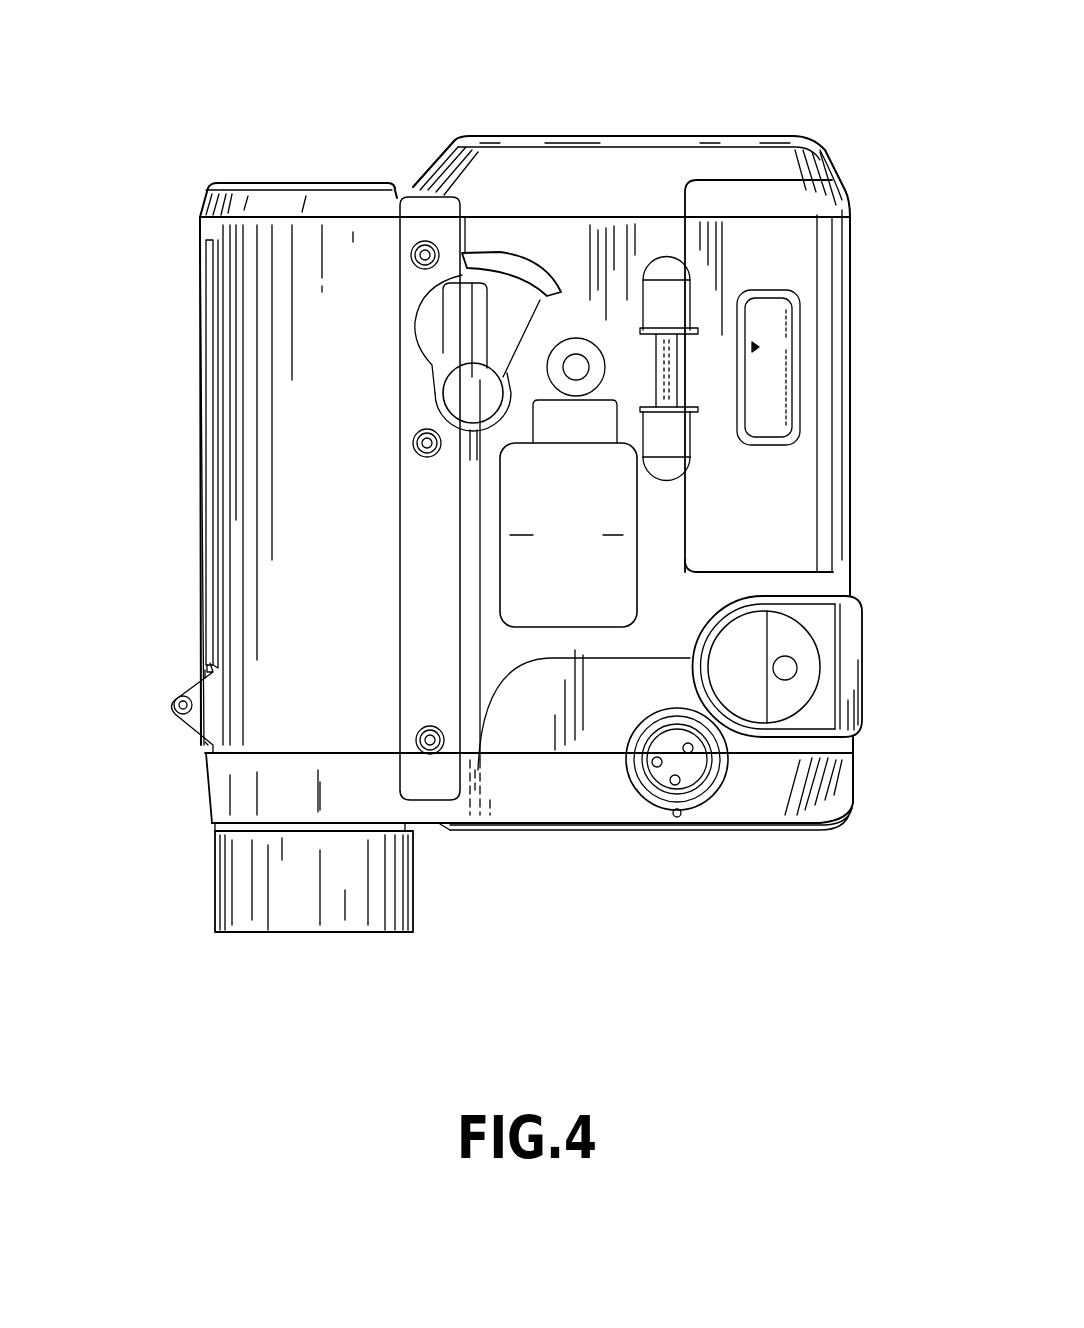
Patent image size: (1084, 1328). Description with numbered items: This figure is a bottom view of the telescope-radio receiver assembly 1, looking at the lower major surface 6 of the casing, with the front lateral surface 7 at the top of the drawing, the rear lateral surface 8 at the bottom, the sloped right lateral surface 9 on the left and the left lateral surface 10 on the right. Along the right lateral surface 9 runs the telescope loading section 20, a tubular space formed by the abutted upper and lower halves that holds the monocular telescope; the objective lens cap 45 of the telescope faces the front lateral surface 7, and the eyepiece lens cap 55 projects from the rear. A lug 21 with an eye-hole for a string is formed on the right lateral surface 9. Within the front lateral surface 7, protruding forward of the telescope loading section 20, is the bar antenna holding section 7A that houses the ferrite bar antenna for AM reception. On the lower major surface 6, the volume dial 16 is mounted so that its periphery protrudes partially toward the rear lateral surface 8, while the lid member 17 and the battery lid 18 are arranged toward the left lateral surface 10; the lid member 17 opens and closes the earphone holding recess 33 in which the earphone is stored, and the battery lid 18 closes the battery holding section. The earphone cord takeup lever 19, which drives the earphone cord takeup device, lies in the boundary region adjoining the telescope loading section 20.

The telescope-radio receiver assembly 1 is at (178, 318).
The lower major surface 6 is at (663, 520).
The front lateral surface 7 is at (608, 134).
The bar antenna holding section 7A is at (643, 172).
The rear lateral surface 8 is at (557, 828).
The right lateral surface 9 is at (202, 566).
The left lateral surface 10 is at (853, 350).
The volume dial 16 is at (700, 795).
The lid member 17 is at (820, 636).
The battery lid 18 is at (825, 252).
The earphone cord takeup lever 19 is at (490, 315).
The telescope loading section 20 is at (224, 466).
The lug 21 is at (174, 708).
The earphone holding recess 33 is at (795, 597).
The objective lens cap 45 is at (278, 187).
The eyepiece lens cap 55 is at (220, 872).